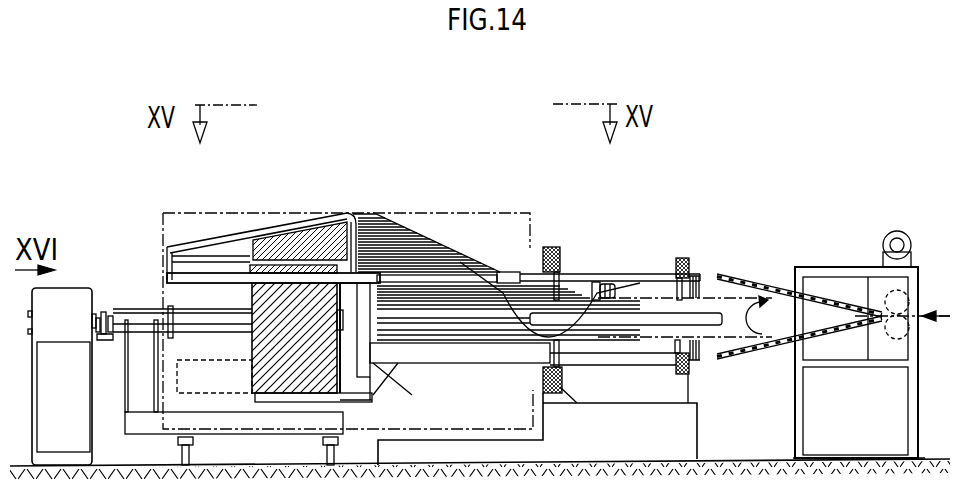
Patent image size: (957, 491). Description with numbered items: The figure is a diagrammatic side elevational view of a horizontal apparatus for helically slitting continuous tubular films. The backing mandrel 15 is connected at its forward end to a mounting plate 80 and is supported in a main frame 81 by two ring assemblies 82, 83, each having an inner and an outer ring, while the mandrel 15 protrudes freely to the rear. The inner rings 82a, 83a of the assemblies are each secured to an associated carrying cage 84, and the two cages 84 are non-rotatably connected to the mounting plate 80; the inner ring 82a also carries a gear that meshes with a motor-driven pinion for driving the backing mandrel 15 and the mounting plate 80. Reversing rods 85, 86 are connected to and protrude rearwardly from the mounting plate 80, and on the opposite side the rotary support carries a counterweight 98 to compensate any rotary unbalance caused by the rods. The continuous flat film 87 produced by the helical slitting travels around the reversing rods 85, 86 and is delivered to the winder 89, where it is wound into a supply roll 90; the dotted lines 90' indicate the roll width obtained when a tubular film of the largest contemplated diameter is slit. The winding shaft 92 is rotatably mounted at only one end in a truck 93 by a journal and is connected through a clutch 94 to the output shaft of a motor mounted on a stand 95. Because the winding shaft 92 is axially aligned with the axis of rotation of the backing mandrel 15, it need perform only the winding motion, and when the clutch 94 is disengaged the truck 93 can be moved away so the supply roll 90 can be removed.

The backing mandrel 15 is at (487, 333).
The mounting plate 80 is at (385, 363).
The main frame 81 is at (690, 440).
The ring assembly 82 is at (552, 247).
The inner ring 82a is at (562, 258).
The ring assembly 83 is at (682, 257).
The inner ring 83a is at (678, 288).
The carrying cage 84 is at (633, 273).
The reversing rod 85 is at (298, 270).
The reversing rod 86 is at (228, 236).
The continuous flat film 87 is at (442, 252).
The winder 89 is at (163, 297).
The supply roll 90 is at (280, 338).
The dotted lines indicating supply roll width 90' is at (214, 376).
The winding shaft 92 is at (229, 320).
The truck 93 is at (276, 430).
The clutch 94 is at (107, 310).
The stand 95 is at (73, 328).
The counterweight 98 is at (352, 393).